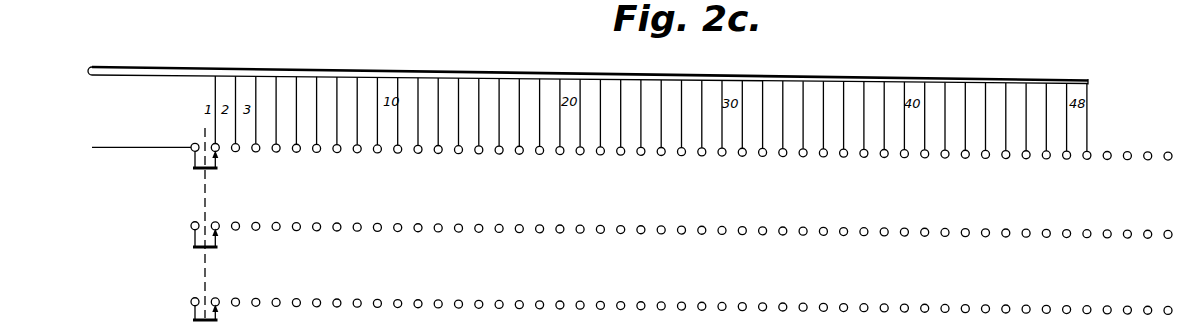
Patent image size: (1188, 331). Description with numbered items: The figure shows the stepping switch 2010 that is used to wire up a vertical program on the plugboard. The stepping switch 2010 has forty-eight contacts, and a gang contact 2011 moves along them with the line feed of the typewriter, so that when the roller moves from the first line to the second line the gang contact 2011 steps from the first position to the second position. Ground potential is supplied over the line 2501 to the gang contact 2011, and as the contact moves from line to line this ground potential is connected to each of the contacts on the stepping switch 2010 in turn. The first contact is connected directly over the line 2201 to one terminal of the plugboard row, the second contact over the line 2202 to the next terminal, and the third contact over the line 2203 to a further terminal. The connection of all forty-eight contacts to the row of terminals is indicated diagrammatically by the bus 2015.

The bus 2015 is at (150, 80).
The line 2201 is at (214, 88).
The line 2202 is at (236, 86).
The line 2203 is at (257, 86).
The line 2501 is at (108, 148).
The gang contact 2011 is at (206, 187).
The stepping switch 2010 is at (180, 248).